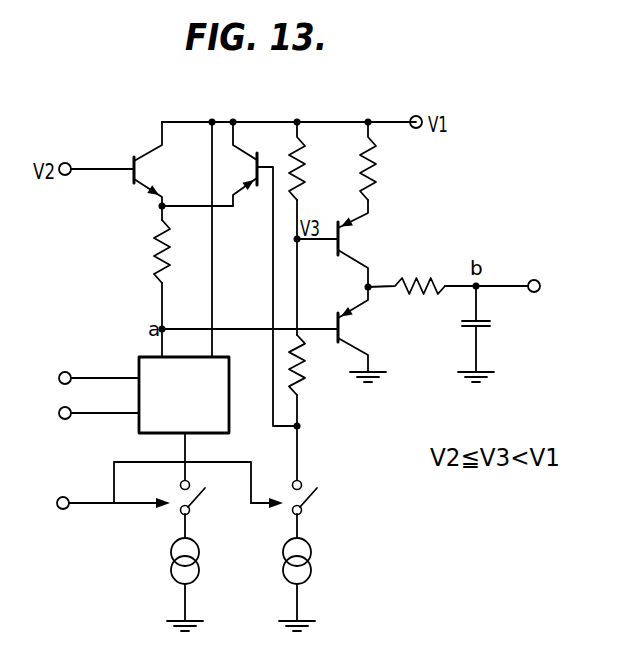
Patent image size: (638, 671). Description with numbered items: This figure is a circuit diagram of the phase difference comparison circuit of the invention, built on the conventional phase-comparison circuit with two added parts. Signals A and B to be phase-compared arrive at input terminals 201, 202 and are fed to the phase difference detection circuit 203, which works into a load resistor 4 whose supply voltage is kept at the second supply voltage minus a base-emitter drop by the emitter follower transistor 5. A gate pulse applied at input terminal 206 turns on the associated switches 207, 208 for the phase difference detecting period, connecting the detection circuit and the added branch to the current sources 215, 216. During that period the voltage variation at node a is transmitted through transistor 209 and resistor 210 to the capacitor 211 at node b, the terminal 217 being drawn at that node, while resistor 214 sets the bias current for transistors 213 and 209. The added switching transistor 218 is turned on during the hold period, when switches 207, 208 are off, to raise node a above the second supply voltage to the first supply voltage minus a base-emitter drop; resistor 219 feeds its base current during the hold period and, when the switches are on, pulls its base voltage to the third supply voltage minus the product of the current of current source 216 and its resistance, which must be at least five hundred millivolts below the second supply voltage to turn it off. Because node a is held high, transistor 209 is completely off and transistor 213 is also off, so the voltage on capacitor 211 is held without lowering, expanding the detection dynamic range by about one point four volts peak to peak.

The load resistor 4 is at (153, 240).
The emitter follower transistor 5 is at (152, 157).
The input terminal 201 is at (69, 372).
The input terminal 202 is at (60, 407).
The phase difference detection circuit 203 is at (230, 380).
The input terminal 206 is at (67, 496).
The switch 207 is at (195, 490).
The switch 208 is at (305, 486).
The transistor 209 is at (357, 320).
The resistor 210 is at (403, 280).
The capacitor 211 is at (306, 167).
The transistor 213 is at (362, 228).
The resistor 214 is at (378, 171).
The current source 215 is at (200, 552).
The current source 216 is at (312, 562).
The output terminal 217 is at (540, 282).
The switching transistor 218 is at (240, 150).
The resistor 219 is at (300, 392).